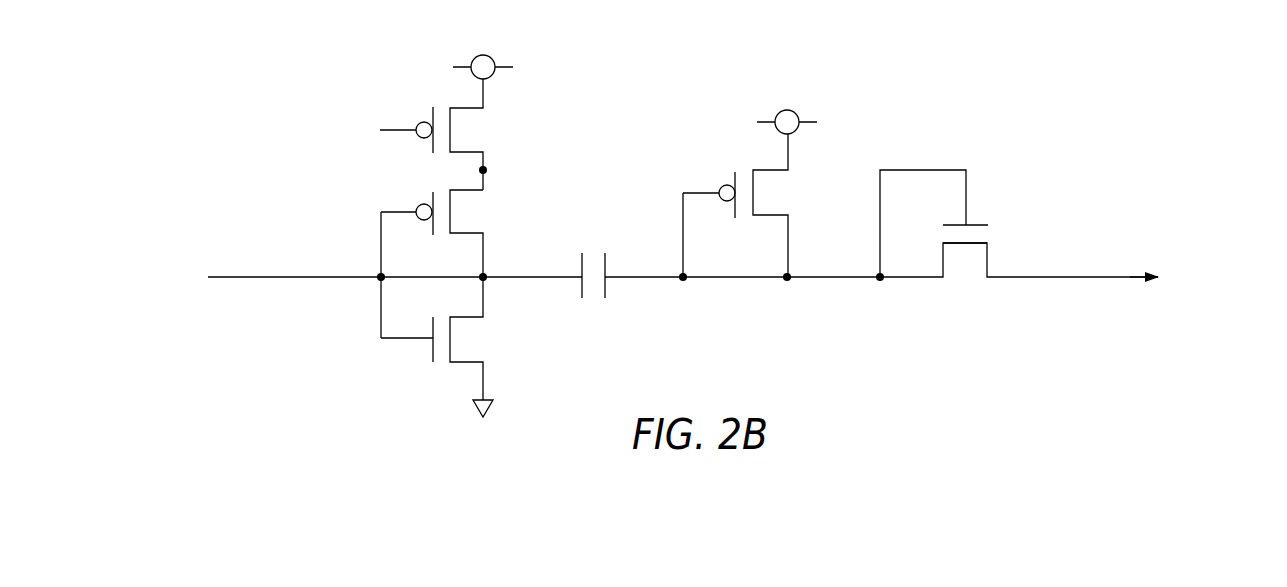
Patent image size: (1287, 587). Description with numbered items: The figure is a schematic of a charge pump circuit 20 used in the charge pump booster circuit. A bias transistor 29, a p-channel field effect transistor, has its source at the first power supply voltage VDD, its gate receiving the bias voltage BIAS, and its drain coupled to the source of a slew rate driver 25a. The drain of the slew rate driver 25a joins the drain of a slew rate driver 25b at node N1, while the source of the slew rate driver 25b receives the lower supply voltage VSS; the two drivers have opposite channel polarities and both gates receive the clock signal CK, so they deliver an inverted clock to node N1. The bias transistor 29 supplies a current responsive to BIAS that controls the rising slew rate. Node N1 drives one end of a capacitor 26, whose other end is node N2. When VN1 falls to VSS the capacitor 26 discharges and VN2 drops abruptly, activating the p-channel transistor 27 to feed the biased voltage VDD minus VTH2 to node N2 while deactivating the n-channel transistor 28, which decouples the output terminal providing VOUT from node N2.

The charge pump circuit 20 is at (1124, 108).
The bias transistor 29 is at (443, 107).
The slew rate driver 25a is at (443, 190).
The slew rate driver 25b is at (443, 363).
The capacitor 26 is at (592, 252).
The transistor 27 is at (745, 175).
The transistor 28 is at (977, 223).